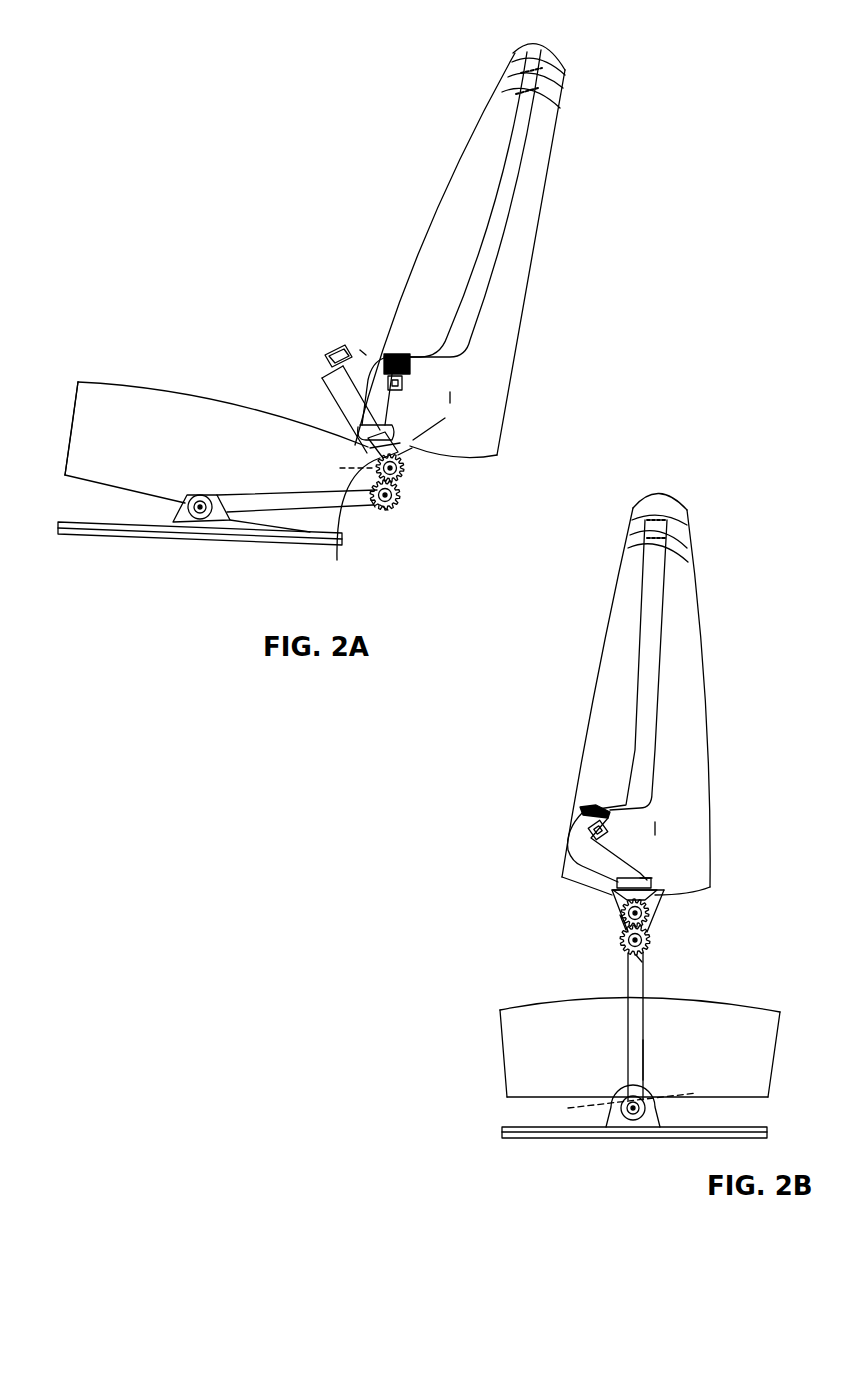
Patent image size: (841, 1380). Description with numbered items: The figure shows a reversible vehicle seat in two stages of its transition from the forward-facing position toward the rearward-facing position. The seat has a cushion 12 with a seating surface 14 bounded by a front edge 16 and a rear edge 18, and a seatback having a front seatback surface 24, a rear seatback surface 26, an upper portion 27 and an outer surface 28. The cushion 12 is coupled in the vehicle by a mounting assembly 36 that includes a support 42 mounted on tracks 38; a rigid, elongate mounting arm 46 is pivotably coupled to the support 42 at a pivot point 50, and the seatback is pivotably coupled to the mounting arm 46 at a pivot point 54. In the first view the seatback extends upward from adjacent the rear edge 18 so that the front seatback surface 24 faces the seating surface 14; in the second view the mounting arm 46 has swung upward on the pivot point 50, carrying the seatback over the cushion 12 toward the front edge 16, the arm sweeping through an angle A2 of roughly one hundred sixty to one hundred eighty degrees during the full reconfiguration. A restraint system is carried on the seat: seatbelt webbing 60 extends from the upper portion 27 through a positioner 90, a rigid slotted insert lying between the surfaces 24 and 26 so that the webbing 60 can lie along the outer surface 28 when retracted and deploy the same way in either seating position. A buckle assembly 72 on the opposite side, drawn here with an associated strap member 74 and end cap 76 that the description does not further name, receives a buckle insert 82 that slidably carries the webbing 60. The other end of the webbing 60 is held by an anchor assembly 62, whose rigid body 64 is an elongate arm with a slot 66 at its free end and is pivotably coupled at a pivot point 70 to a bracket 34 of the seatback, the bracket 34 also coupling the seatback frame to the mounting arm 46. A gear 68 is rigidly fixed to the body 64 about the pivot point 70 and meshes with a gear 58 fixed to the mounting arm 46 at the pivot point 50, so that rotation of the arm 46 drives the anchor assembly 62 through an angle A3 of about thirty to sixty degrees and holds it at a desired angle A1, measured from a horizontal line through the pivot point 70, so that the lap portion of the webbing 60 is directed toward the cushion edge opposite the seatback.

In FIG. 2A, the cushion 12 is at (574, 106).
In FIG. 2B, the cushion 12 is at (702, 563).
In FIG. 2A, the seating surface 14 is at (118, 380).
In FIG. 2B, the seating surface 14 is at (537, 1000).
In FIG. 2A, the front edge 16 is at (78, 380).
In FIG. 2B, the front edge 16 is at (502, 1008).
In FIG. 2A, the rear edge 18 is at (375, 448).
In FIG. 2B, the rear edge 18 is at (780, 1010).
In FIG. 2A, the front seatback surface 24 is at (404, 278).
In FIG. 2B, the front seatback surface 24 is at (587, 710).
In FIG. 2A, the rear seatback surface 26 is at (530, 278).
In FIG. 2B, the rear seatback surface 26 is at (705, 693).
In FIG. 2A, the upper portion 27 is at (531, 62).
In FIG. 2B, the upper portion 27 is at (652, 508).
In FIG. 2A, the outer surface 28 is at (452, 397).
In FIG. 2B, the outer surface 28 is at (657, 828).
In FIG. 2A, the bracket 34 is at (407, 463).
In FIG. 2B, the bracket 34 is at (663, 903).
In FIG. 2A, the mounting assembly 36 is at (318, 516).
In FIG. 2B, the mounting assembly 36 is at (648, 1060).
In FIG. 2A, the tracks 38 is at (102, 534).
In FIG. 2B, the tracks 38 is at (527, 1138).
In FIG. 2A, the support 42 is at (183, 521).
In FIG. 2B, the support 42 is at (617, 1122).
In FIG. 2A, the mounting arm 46 is at (238, 503).
In FIG. 2B, the mounting arm 46 is at (632, 1022).
In FIG. 2A, the pivot point 50 is at (200, 500).
In FIG. 2B, the pivot point 50 is at (617, 1090).
In FIG. 2A, the pivot point 54 is at (397, 498).
In FIG. 2B, the pivot point 54 is at (649, 946).
In FIG. 2A, the gear 58 is at (382, 509).
In FIG. 2B, the gear 58 is at (643, 961).
In FIG. 2A, the seatbelt webbing 60 is at (488, 222).
In FIG. 2B, the seatbelt webbing 60 is at (653, 630).
In FIG. 2A, the anchor assembly 62 is at (414, 444).
In FIG. 2B, the anchor assembly 62 is at (660, 894).
In FIG. 2A, the body 64 is at (396, 447).
In FIG. 2B, the body 64 is at (623, 897).
In FIG. 2A, the slot 66 is at (355, 437).
In FIG. 2B, the slot 66 is at (623, 883).
In FIG. 2A, the gear 68 is at (414, 460).
In FIG. 2B, the gear 68 is at (654, 914).
In FIG. 2A, the pivot point 70 is at (371, 506).
In FIG. 2B, the pivot point 70 is at (623, 917).
In FIG. 2A, the buckle assembly 72 is at (361, 340).
In FIG. 2A, the headrest post 74 is at (327, 393).
In FIG. 2A, the headrest post cap 76 is at (327, 350).
In FIG. 2A, the buckle insert 82 is at (402, 358).
In FIG. 2B, the buckle insert 82 is at (592, 808).
In FIG. 2A, the positioner 90 is at (547, 66).
In FIG. 2B, the positioner 90 is at (662, 515).
In FIG. 2A, the angle A1 is at (351, 525).
In FIG. 2B, the angle A2 is at (655, 1088).
In FIG. 2B, the angle A3 is at (652, 880).